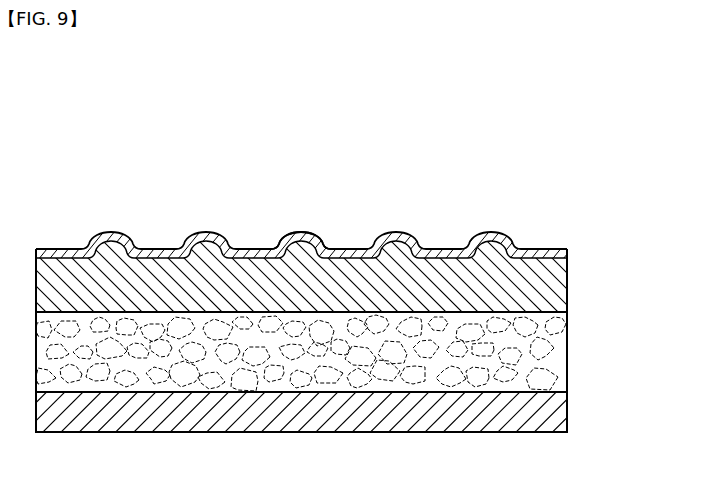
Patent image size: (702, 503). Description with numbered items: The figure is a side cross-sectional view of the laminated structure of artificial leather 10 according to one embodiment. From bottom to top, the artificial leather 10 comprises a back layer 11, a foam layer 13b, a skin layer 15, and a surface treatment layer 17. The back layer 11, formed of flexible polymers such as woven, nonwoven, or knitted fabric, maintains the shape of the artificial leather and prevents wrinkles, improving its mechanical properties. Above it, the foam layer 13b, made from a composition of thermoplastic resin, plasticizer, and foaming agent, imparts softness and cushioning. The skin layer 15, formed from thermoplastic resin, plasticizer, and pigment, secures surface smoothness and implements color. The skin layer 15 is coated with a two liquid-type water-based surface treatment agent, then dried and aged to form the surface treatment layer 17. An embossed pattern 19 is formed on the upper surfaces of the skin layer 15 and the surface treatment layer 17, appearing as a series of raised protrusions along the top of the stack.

The artificial leather 10 is at (470, 187).
The back layer 11 is at (558, 408).
The foam layer 13b is at (558, 350).
The skin layer 15 is at (558, 283).
The surface treatment layer 17 is at (548, 252).
The embossed pattern 19 is at (312, 215).